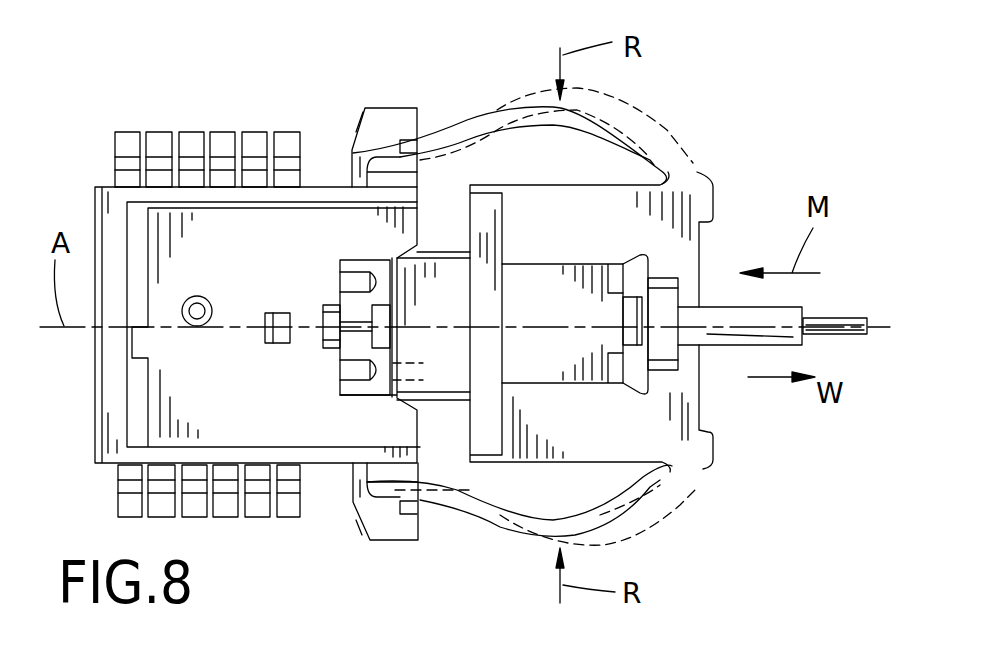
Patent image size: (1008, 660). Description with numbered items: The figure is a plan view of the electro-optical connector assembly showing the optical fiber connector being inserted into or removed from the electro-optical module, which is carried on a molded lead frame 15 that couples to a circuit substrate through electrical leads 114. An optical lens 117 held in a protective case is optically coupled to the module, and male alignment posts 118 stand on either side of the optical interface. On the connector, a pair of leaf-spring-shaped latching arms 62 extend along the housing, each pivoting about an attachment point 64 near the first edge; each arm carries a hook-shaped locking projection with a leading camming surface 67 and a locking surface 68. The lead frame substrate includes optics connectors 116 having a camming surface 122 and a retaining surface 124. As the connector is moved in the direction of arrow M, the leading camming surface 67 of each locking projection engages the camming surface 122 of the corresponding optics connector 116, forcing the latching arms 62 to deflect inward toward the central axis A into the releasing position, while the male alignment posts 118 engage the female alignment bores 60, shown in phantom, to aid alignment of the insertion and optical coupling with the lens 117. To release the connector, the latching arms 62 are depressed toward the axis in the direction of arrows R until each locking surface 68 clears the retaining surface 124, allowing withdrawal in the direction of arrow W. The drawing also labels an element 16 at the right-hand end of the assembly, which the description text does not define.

The lead frame 15 is at (101, 187).
The electrical leads 114 is at (277, 228).
The optical lens 117 is at (265, 332).
The male alignment posts 118 is at (340, 280).
The female alignment bores 60 is at (423, 283).
The leading camming surface 67 is at (378, 172).
The locking surface 68 is at (418, 143).
The camming surface 122 is at (390, 135).
The retaining surface 124 is at (352, 148).
The optics connectors 116 is at (380, 120).
The latching arms 62 is at (470, 135).
The attachment point 64 is at (685, 178).
The output shaft 16 is at (832, 322).